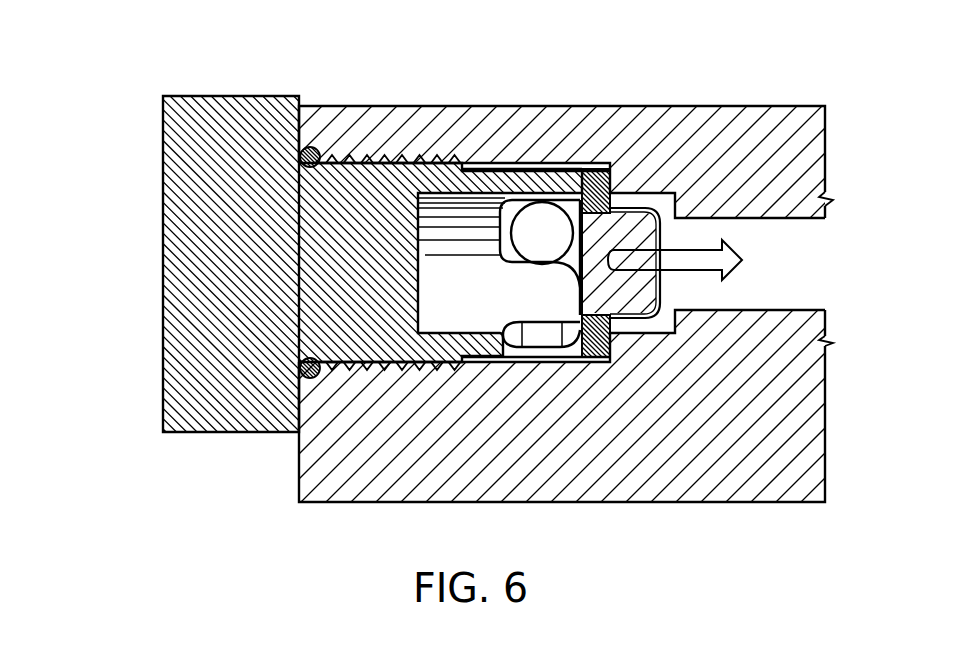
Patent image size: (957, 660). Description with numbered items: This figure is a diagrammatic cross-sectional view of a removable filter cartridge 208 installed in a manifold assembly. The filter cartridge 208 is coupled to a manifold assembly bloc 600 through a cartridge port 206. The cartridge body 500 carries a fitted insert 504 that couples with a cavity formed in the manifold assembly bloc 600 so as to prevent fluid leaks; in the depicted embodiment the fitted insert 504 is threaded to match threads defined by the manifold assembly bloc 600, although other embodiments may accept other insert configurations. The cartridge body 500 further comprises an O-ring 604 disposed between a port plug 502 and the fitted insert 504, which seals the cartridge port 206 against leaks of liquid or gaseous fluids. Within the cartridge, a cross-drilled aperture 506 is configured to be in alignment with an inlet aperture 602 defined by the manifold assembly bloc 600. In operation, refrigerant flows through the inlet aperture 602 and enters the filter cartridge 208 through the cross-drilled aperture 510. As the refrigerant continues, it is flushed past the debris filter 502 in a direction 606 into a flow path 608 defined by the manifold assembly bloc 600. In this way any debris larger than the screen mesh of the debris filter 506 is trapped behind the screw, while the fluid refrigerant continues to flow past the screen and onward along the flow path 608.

The filter cartridge 208 is at (122, 77).
The cartridge port 206 is at (275, 440).
The cartridge body 500 is at (262, 107).
The port plug 502 is at (177, 204).
The fitted insert 504 is at (400, 158).
The cross-drilled aperture 506 is at (592, 333).
The cross-drilled aperture 510 is at (512, 203).
The manifold assembly bloc 600 is at (717, 122).
The inlet aperture 602 is at (542, 230).
The O-ring 604 is at (312, 147).
The direction 606 is at (670, 260).
The flow path 608 is at (797, 285).